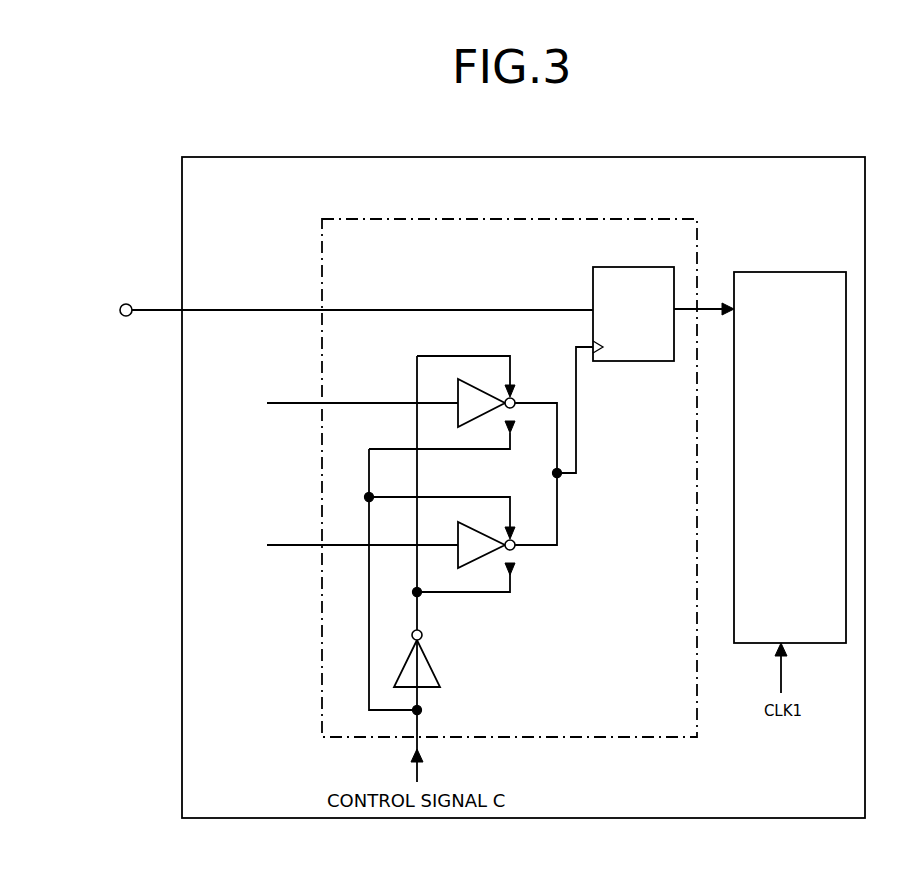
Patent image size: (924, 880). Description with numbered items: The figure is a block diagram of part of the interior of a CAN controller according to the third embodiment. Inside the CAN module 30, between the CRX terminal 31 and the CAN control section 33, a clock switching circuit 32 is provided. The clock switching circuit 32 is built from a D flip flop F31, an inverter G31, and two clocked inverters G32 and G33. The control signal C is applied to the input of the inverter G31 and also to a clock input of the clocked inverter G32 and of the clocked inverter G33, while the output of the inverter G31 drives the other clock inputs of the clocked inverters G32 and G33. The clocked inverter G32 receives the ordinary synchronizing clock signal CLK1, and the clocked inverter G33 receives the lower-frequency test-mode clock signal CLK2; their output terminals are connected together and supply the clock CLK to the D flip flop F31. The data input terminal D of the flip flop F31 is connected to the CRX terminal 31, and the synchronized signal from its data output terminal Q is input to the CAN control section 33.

The CAN module 30 is at (810, 157).
The CRX terminal 31 is at (127, 304).
The clock switching circuit 32 is at (645, 219).
The CAN control section 33 is at (803, 278).
The D flip flop F31 is at (645, 267).
The inverter G31 is at (435, 672).
The clocked inverter G32 is at (470, 385).
The clocked inverter G33 is at (480, 557).